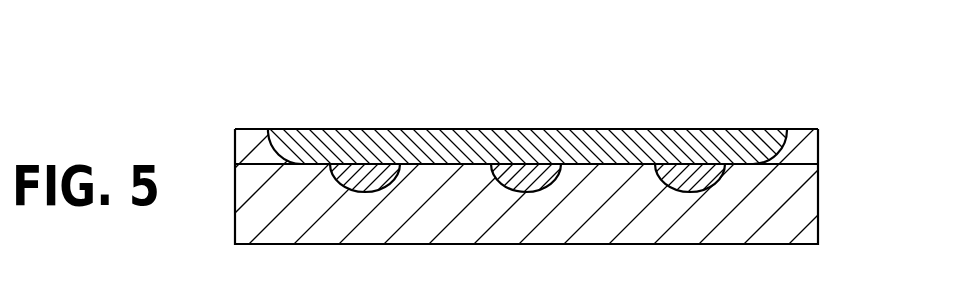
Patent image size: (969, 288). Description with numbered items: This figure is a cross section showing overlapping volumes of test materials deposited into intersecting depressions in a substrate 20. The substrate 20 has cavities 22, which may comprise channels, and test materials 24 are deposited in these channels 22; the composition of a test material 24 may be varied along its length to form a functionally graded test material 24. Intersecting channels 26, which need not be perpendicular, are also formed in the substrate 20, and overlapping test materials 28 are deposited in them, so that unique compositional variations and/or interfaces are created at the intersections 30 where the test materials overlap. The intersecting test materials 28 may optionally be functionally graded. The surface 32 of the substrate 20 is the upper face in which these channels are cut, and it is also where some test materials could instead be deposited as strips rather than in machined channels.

The substrate 20 is at (820, 193).
The cavity 22 is at (717, 181).
The test material 24 is at (680, 175).
The intersecting channel 26 is at (582, 173).
The overlapping test material 28 is at (435, 140).
The intersection 30 is at (700, 163).
The surface 32 is at (247, 128).